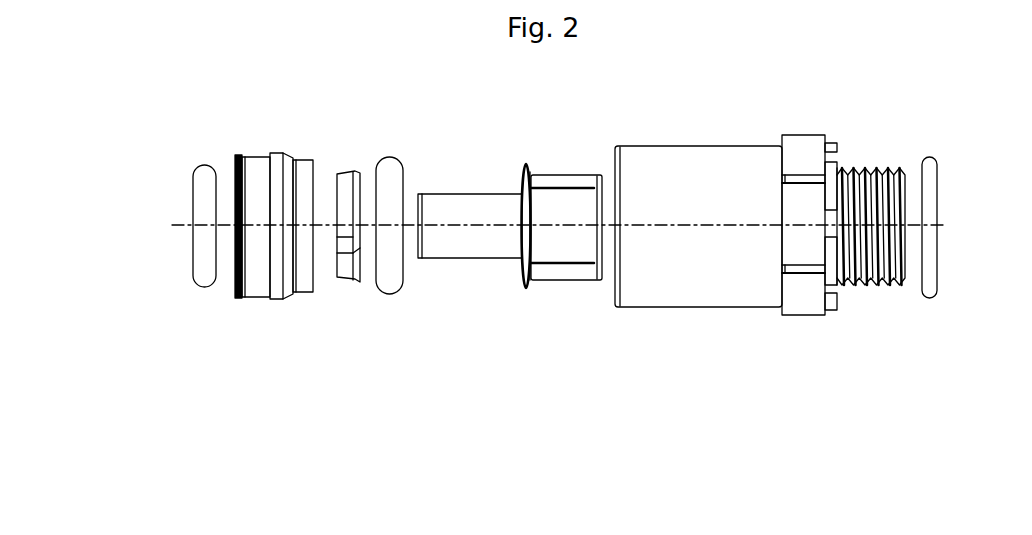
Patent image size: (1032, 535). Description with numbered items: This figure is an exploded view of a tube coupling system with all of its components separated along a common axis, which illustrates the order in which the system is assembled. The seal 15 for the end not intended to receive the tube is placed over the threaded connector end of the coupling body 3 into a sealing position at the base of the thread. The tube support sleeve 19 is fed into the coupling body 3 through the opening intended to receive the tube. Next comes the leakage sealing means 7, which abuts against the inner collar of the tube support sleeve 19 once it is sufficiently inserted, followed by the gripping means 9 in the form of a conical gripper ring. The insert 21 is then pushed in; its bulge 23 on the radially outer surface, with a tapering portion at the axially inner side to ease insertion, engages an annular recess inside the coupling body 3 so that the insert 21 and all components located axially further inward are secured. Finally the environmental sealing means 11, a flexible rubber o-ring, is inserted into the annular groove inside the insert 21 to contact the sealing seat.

The coupling body 3 is at (752, 170).
The leakage sealing means 7 is at (396, 185).
The gripping means 9 is at (345, 183).
The environmental sealing means 11 is at (200, 180).
The seal 15 is at (928, 170).
The tube support sleeve 19 is at (582, 182).
The insert 21 is at (257, 175).
The bulge 23 is at (278, 185).